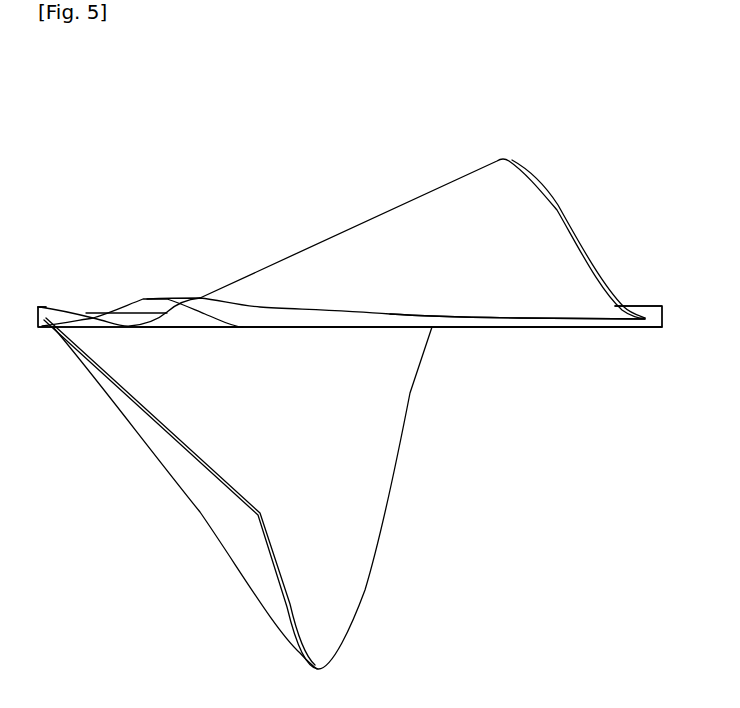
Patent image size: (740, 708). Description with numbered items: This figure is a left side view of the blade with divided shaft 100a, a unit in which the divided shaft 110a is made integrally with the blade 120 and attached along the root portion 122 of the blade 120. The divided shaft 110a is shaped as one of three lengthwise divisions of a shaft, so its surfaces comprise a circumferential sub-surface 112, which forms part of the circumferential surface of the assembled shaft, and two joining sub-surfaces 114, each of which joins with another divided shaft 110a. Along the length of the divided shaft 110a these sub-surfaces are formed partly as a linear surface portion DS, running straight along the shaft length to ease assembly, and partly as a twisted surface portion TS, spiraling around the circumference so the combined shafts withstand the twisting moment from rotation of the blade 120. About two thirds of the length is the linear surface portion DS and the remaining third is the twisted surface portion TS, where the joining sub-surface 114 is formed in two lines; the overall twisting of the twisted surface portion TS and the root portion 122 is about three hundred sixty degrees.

The blade with divided shaft 100a is at (137, 101).
The divided shaft 110a is at (608, 328).
The circumferential sub-surface 112 is at (288, 320).
The joining sub-surface 114 is at (150, 307).
The blade 120 is at (408, 217).
The root portion 122 is at (478, 313).
The twisted surface portion TS is at (128, 307).
The linear surface portion DS is at (522, 322).